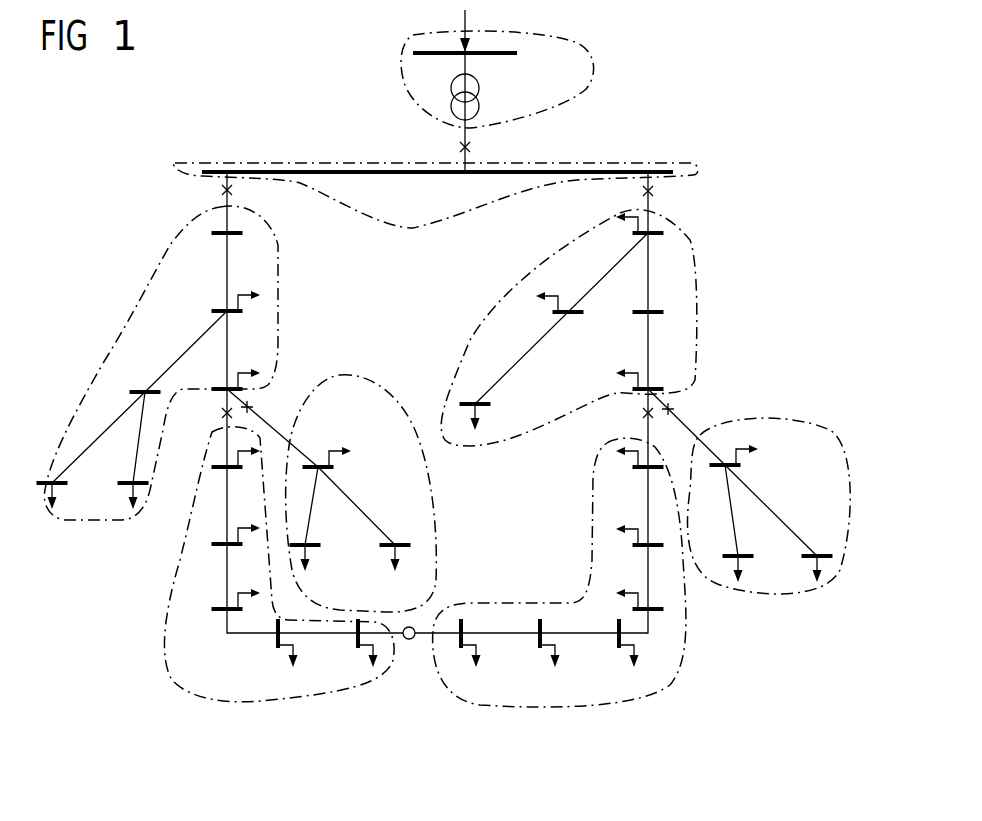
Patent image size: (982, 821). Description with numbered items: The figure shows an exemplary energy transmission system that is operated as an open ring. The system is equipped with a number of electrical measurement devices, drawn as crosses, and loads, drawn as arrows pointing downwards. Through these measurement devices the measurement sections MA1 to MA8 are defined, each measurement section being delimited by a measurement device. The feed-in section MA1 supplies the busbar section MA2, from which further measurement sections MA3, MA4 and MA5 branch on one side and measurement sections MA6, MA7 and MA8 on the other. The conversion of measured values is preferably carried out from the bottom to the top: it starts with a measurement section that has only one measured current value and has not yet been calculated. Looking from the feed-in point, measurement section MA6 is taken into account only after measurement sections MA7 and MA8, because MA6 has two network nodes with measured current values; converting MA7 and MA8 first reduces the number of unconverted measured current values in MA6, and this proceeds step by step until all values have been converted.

The measurement section MA1 is at (575, 78).
The measurement section MA2 is at (420, 220).
The measurement section MA3 is at (142, 298).
The measurement section MA4 is at (343, 378).
The measurement section MA5 is at (258, 692).
The measurement section MA6 is at (683, 288).
The measurement section MA7 is at (805, 443).
The measurement section MA8 is at (548, 692).